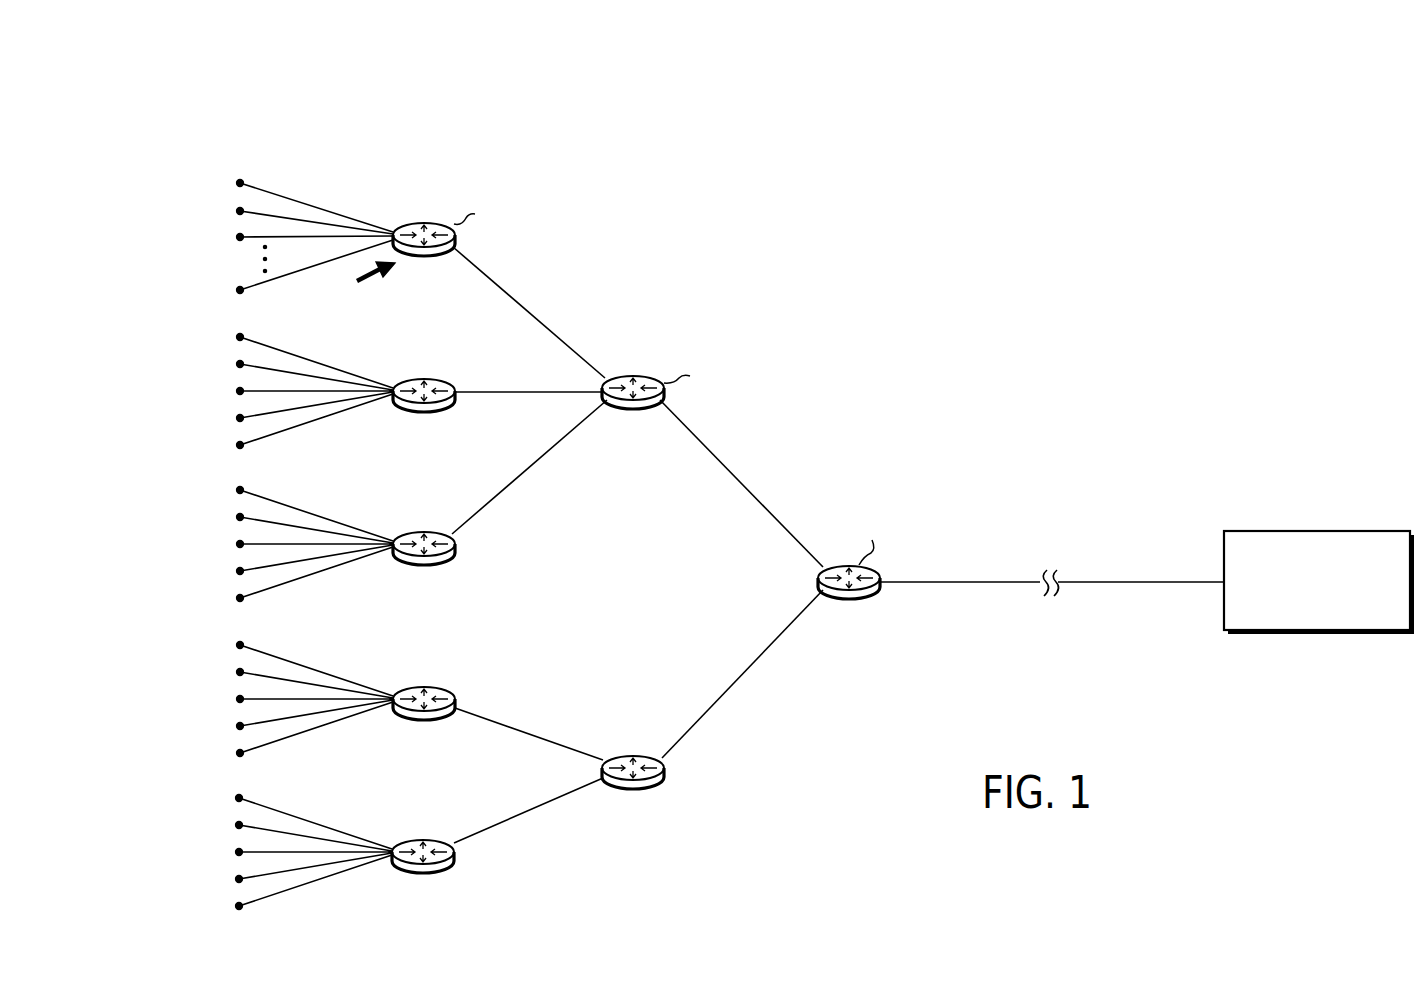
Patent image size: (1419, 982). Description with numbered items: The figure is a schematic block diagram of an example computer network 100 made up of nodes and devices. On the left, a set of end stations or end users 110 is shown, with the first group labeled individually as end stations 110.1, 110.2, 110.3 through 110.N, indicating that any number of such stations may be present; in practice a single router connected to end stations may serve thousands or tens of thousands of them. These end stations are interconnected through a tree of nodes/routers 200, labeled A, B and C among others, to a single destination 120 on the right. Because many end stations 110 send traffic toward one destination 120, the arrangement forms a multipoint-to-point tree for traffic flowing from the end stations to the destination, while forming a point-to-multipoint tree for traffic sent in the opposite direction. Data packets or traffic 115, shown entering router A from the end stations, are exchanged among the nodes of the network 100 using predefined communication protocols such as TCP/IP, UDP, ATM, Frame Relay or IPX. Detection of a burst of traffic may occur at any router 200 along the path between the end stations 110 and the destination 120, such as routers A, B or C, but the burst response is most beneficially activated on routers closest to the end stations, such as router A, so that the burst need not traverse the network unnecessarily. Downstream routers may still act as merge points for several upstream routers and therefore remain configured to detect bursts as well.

The computer network 100 is at (988, 259).
The end stations 110 is at (353, 142).
The end station 110.1 is at (234, 183).
The end station 110.2 is at (234, 211).
The end station 110.3 is at (234, 237).
The end station 110.N is at (234, 290).
The data packets/traffic 115 is at (380, 294).
The routers 200 is at (893, 142).
The destination 120 is at (1300, 606).